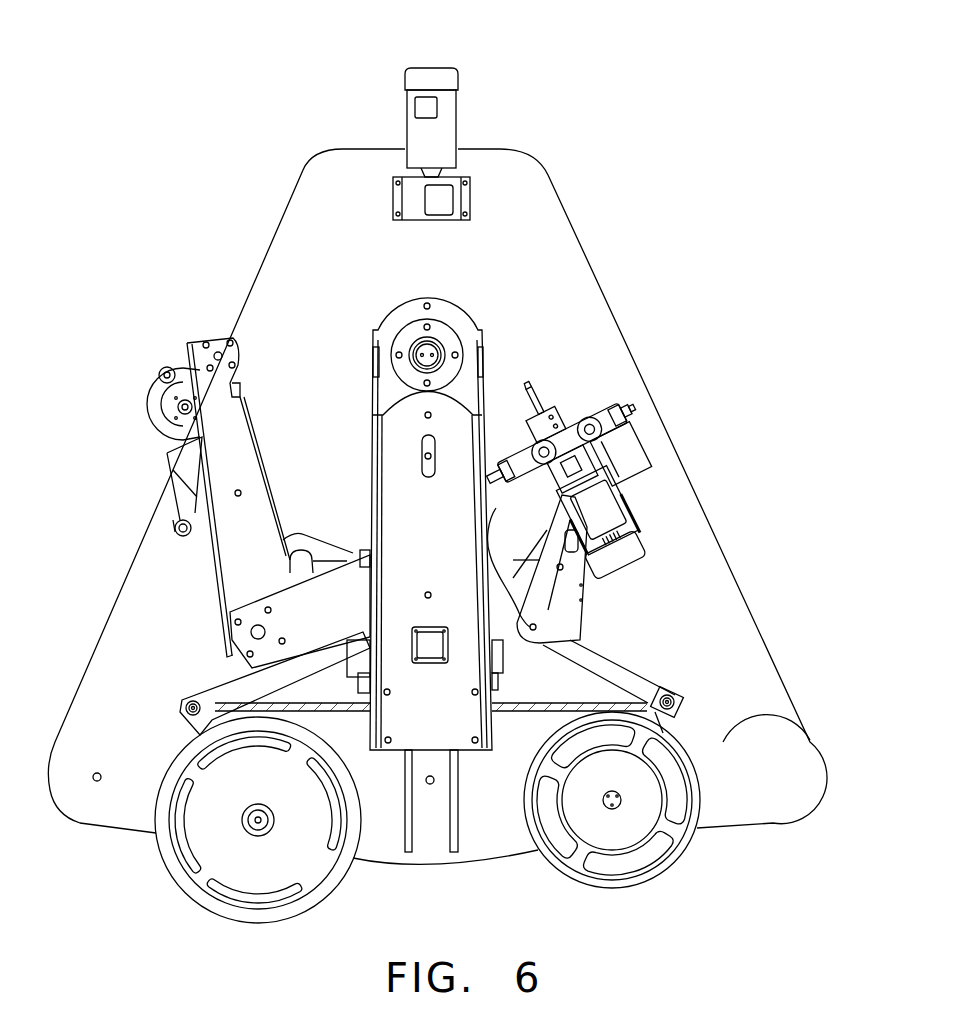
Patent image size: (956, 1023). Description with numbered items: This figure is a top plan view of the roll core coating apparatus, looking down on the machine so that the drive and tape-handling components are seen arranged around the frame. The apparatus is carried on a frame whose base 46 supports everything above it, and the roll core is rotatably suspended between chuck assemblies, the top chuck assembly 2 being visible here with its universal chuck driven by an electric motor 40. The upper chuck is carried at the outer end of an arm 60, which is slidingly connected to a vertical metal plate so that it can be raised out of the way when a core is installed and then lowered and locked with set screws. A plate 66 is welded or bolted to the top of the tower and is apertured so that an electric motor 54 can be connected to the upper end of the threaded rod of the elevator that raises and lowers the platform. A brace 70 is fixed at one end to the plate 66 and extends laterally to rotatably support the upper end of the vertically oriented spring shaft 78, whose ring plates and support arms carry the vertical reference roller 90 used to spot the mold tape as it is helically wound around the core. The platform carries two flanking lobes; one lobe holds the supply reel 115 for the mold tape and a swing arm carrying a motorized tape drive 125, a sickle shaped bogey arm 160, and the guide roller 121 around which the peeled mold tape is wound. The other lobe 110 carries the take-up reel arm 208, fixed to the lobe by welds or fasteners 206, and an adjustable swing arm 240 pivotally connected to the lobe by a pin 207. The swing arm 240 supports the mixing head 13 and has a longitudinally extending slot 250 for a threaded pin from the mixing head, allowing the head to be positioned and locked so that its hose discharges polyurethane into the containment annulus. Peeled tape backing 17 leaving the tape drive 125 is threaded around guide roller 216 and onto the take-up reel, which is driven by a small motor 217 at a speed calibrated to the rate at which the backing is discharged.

The top chuck assembly 2 is at (402, 318).
The mixing head 13 is at (655, 585).
The peeled tape backing 17 is at (557, 394).
The electric motor 40 is at (452, 103).
The base 46 is at (760, 697).
The electric motor 54 is at (428, 650).
The arm 60 is at (470, 325).
The plate 66 is at (453, 482).
The brace 70 is at (320, 613).
The spring shaft 78 is at (240, 665).
The vertical reference roller 90 is at (217, 338).
The lobe 110 is at (493, 481).
The supply reel 115 is at (307, 900).
The guide roller 121 is at (158, 368).
The motorized tape drive 125 is at (293, 556).
The sickle shaped bogey arm 160 is at (150, 418).
The fasteners 206 is at (577, 640).
The pin 207 is at (513, 578).
The arm 208 is at (640, 673).
The guide roller 216 is at (670, 688).
The small motor 217 is at (695, 791).
The swing arm 240 is at (550, 590).
The longitudinally extending slot 250 is at (633, 453).